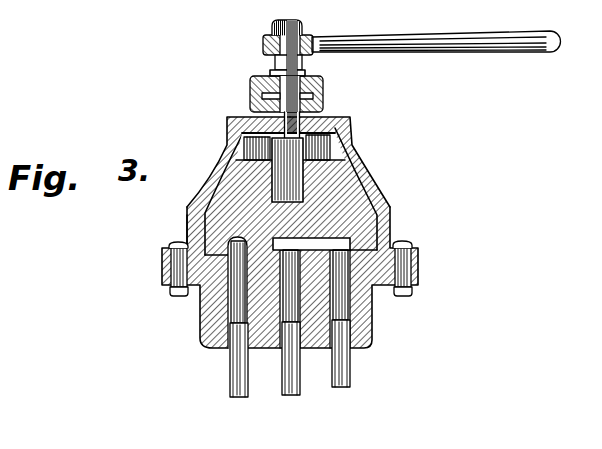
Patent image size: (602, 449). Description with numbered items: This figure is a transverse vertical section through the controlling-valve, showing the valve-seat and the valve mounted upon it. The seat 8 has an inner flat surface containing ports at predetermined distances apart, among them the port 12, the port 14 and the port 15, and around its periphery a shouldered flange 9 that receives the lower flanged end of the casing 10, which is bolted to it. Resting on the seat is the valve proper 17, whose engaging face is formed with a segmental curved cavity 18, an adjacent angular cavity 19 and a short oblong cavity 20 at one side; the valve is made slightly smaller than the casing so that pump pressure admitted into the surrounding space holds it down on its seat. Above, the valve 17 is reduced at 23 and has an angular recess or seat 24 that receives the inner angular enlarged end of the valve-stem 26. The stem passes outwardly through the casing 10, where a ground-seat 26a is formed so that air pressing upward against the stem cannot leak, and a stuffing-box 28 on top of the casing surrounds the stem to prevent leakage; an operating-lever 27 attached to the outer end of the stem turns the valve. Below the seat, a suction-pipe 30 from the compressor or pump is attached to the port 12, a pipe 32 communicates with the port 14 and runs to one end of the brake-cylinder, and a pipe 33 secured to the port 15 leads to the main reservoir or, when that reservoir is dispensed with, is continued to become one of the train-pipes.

The operating-lever 27 is at (436, 29).
The valve-stem 26 is at (303, 74).
The ground-seat 26a is at (238, 128).
The stuffing-box 28 is at (325, 101).
The angular recess or seat 24 is at (351, 120).
The reduced portion of the valve 23 is at (317, 158).
The valve proper 17 is at (341, 203).
The casing 10 is at (384, 199).
The angular cavity 19 is at (391, 224).
The segmental curved cavity 18 is at (188, 240).
The peripheral shouldered flange 9 is at (163, 282).
The seat 8 is at (197, 289).
The port 15 is at (340, 311).
The port 14 is at (216, 349).
The port 12 is at (277, 345).
The pipe 33 is at (362, 353).
The pipe 32 is at (236, 376).
The suction-pipe 30 is at (297, 370).
The short oblong cavity 20 is at (287, 170).